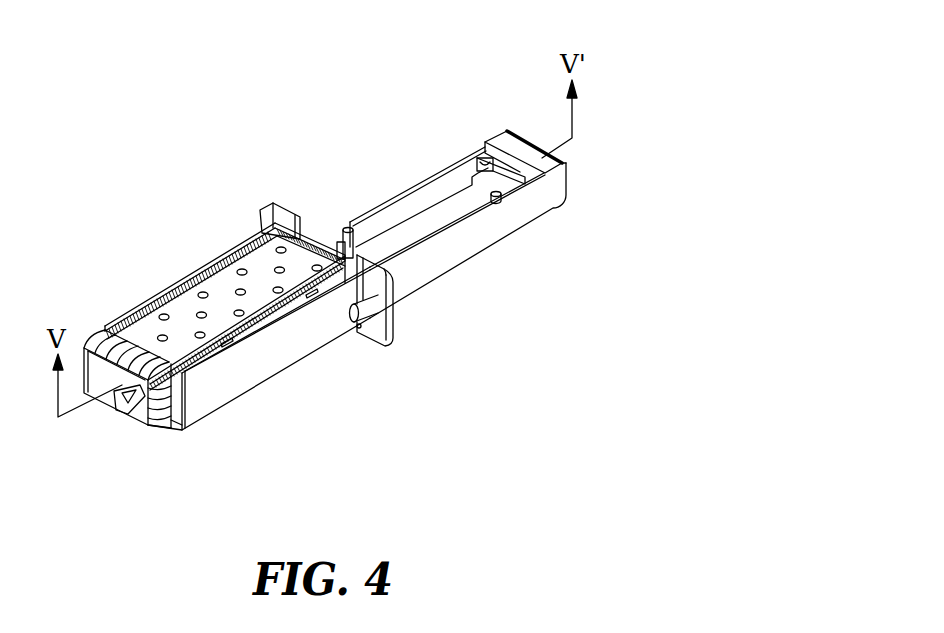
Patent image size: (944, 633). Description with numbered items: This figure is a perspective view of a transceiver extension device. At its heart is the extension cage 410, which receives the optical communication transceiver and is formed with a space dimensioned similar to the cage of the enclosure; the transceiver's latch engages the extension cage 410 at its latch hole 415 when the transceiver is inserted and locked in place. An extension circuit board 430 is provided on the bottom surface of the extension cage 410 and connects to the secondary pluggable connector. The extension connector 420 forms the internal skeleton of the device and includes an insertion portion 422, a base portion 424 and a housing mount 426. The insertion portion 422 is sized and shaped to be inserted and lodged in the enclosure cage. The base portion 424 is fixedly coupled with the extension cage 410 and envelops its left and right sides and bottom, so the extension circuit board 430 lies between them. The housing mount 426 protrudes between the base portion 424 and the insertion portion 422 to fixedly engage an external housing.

The extension cage 410 is at (303, 260).
The latch hole 415 is at (122, 407).
The extension connector 420 is at (515, 308).
The insertion portion 422 is at (430, 268).
The base portion 424 is at (312, 331).
The housing mount 426 is at (392, 303).
The extension circuit board 430 is at (430, 220).